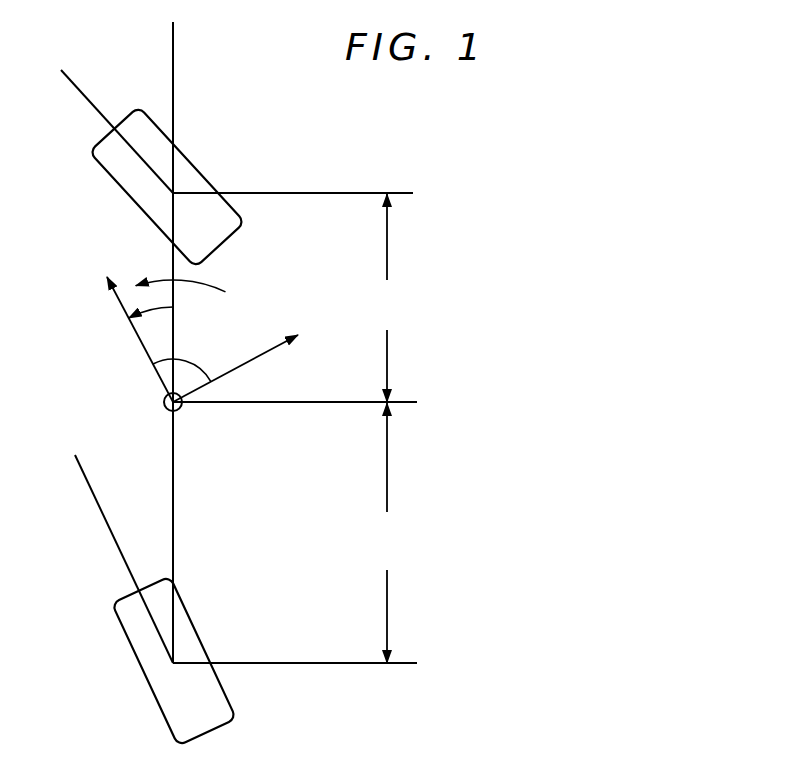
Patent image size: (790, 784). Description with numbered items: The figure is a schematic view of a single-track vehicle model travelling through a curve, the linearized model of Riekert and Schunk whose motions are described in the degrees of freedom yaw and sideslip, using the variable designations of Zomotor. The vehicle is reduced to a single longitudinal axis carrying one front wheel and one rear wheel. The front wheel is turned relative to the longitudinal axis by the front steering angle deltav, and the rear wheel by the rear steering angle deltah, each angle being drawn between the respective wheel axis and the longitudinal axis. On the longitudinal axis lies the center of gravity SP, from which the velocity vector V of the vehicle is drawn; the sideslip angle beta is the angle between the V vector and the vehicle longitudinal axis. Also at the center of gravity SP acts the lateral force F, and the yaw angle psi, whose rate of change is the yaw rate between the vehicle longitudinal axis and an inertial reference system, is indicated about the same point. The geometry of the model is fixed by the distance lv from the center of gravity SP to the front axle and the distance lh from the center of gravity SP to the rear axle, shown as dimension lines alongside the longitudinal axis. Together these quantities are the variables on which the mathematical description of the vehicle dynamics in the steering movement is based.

The front steering angle deltav is at (173, 50).
The rear steering angle deltah is at (173, 477).
The center of gravity SP is at (149, 403).
The velocity V is at (131, 322).
The lateral force F is at (246, 360).
The sideslip angle beta is at (151, 325).
The yaw angle psi is at (181, 331).
The distance center of gravity—front axle lv is at (388, 298).
The distance center of gravity—rear axle lh is at (388, 533).